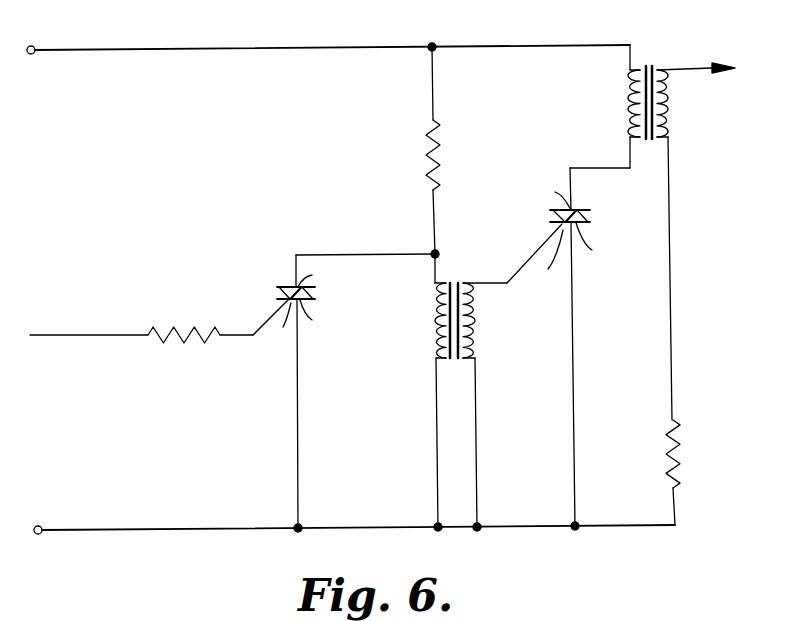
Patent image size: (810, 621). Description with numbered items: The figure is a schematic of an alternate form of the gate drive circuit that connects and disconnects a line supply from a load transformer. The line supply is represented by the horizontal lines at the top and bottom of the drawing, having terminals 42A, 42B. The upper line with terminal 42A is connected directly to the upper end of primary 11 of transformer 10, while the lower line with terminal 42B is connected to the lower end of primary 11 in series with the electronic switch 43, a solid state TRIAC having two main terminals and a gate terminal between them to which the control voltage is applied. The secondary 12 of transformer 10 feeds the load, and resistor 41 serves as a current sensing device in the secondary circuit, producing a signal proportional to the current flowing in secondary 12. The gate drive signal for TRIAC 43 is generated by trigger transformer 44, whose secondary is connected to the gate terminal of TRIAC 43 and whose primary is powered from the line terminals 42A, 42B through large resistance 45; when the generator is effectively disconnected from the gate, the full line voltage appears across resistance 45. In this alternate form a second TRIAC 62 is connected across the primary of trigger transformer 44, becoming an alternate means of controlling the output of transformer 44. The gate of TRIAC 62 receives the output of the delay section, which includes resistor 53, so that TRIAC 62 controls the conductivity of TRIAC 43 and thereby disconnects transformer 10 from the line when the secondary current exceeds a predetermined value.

The line supply terminal 42A is at (328, 40).
The line supply terminal 42B is at (354, 521).
The transformer 10 is at (678, 227).
The primary 11 is at (628, 102).
The secondary 12 is at (668, 100).
The resistor 41 is at (679, 454).
The electronic switch (TRIAC) 43 is at (578, 210).
The trigger transformer 44 is at (455, 282).
The large resistance 45 is at (440, 157).
The resistor 53 is at (181, 327).
The second TRIAC 62 is at (291, 287).